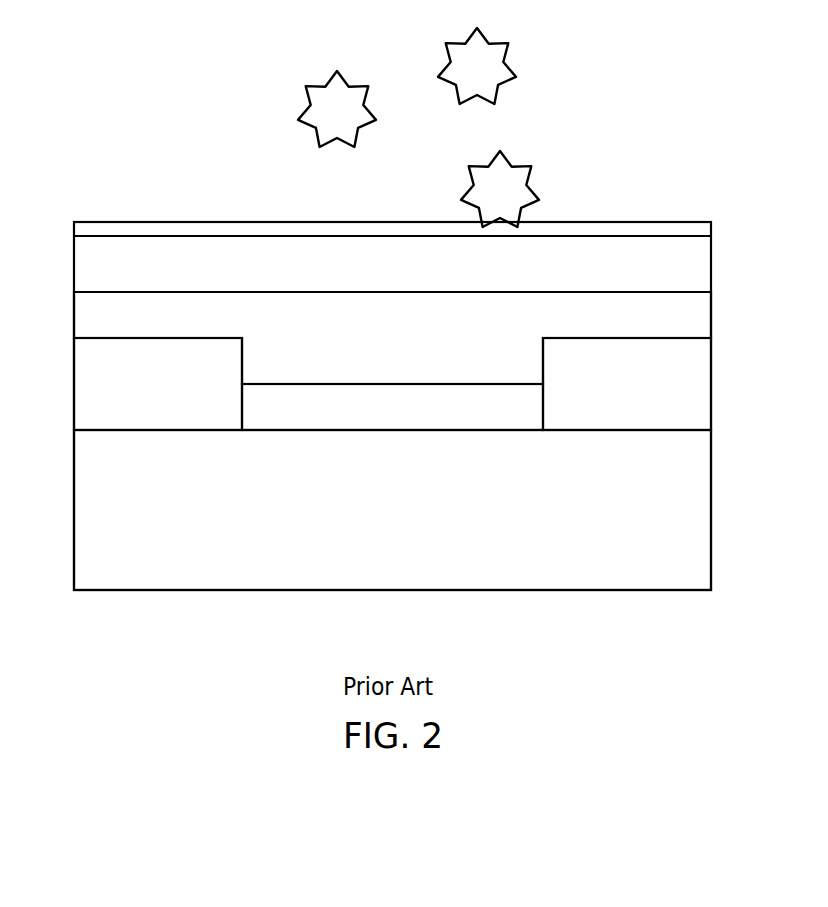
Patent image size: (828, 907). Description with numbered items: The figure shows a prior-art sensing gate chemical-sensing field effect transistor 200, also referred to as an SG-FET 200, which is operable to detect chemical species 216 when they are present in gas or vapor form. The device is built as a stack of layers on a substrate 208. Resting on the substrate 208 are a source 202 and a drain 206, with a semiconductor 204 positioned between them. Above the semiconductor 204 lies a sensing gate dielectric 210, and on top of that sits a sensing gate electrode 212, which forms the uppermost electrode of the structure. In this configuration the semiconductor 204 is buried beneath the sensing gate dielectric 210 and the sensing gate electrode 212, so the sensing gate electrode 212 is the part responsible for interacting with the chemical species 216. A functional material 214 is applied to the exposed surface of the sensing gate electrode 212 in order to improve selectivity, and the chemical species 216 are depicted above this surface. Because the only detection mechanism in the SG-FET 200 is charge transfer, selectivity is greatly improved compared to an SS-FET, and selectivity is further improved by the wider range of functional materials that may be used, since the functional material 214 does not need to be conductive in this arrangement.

The sensing gate chemical-sensing field effect transistor 200 is at (163, 84).
The source 202 is at (178, 412).
The semiconductor 204 is at (498, 420).
The drain 206 is at (647, 412).
The substrate 208 is at (469, 524).
The sensing gate dielectric 210 is at (412, 366).
The sensing gate electrode 212 is at (548, 278).
The functional material 214 is at (710, 152).
The chemical species 216 is at (507, 45).